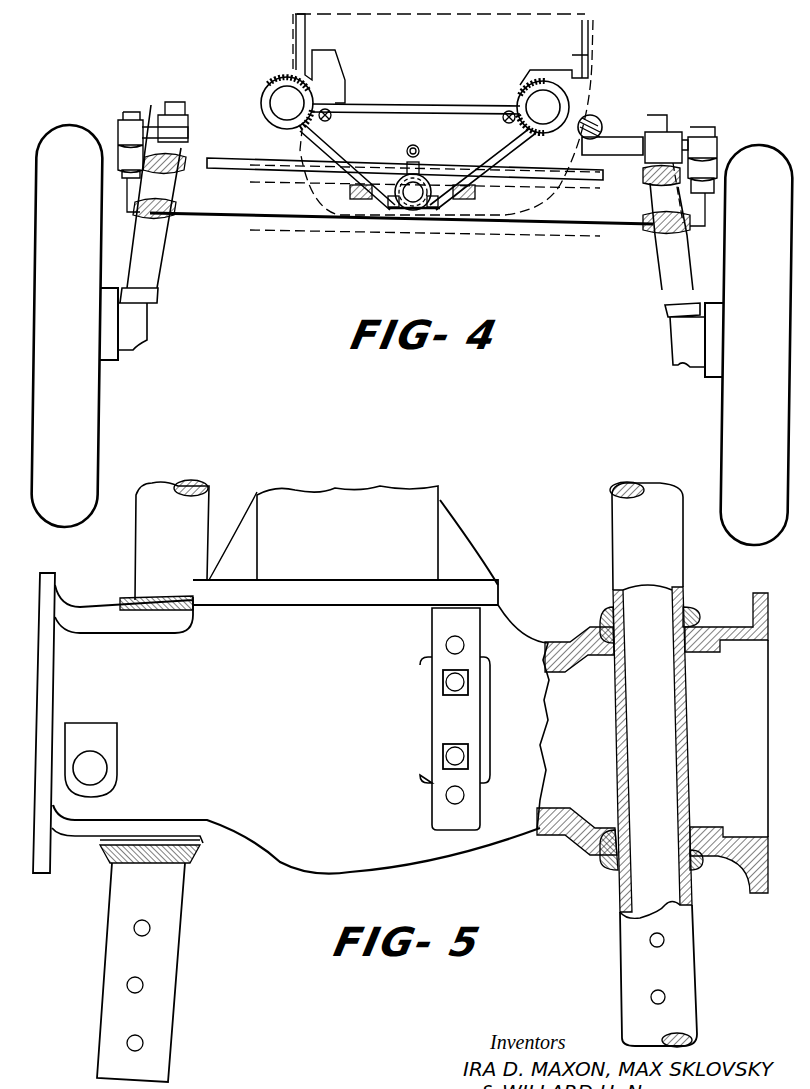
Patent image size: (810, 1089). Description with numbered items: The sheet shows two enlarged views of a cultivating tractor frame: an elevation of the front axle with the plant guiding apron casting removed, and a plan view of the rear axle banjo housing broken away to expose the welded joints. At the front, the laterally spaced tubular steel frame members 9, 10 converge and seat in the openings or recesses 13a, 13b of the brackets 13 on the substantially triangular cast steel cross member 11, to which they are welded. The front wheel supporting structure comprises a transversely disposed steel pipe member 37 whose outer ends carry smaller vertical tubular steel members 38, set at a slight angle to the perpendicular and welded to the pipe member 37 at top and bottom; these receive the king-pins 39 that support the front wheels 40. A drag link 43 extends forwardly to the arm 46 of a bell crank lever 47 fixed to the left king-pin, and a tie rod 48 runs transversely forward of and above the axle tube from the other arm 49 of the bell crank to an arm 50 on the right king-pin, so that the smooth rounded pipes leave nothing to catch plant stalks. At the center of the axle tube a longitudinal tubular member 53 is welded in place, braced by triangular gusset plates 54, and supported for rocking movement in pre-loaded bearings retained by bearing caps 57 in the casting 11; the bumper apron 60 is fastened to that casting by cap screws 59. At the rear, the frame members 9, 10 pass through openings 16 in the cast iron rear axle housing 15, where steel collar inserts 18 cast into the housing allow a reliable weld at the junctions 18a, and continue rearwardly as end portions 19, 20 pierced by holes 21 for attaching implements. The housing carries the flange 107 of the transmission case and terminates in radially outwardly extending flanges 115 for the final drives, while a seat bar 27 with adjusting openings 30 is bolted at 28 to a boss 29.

In FIG. 4, the tubular frame member 9 is at (566, 106).
In FIG. 5, the tubular frame member 9 is at (190, 508).
In FIG. 4, the tubular frame member 10 is at (268, 103).
In FIG. 5, the tubular frame member 10 is at (633, 517).
In FIG. 4, the cast steel cross member 11 is at (413, 120).
In FIG. 4, the bracket 13 is at (305, 90).
In FIG. 4, the opening or recess 13a is at (548, 95).
In FIG. 4, the opening or recess 13b is at (283, 86).
In FIG. 5, the rear axle housing 15 is at (305, 848).
In FIG. 5, the opening 16 is at (628, 665).
In FIG. 5, the steel collar insert 18 is at (122, 608).
In FIG. 5, the weld bead 18a is at (695, 635).
In FIG. 5, the rear end portion 19 is at (155, 900).
In FIG. 5, the rear end portion 20 is at (650, 965).
In FIG. 5, the hole 21 is at (145, 935).
In FIG. 5, the seat bar 27 is at (455, 808).
In FIG. 5, the bolt 28 is at (458, 683).
In FIG. 5, the boss 29 is at (432, 722).
In FIG. 5, the opening 30 is at (446, 645).
In FIG. 4, the transverse steel pipe member 37 is at (255, 192).
In FIG. 4, the vertical tubular steel member 38 is at (152, 243).
In FIG. 4, the king-pin 39 is at (135, 320).
In FIG. 4, the front wheel 40 is at (73, 372).
In FIG. 4, the drag link 43 is at (578, 128).
In FIG. 4, the arm 46 is at (620, 148).
In FIG. 4, the bell crank lever 47 is at (676, 110).
In FIG. 4, the tie rod 48 is at (302, 167).
In FIG. 4, the arm 49 is at (672, 142).
In FIG. 4, the arm 50 is at (152, 128).
In FIG. 4, the longitudinal tubular member 53 is at (420, 212).
In FIG. 4, the triangular gusset plate 54 is at (360, 198).
In FIG. 4, the bearing cap 57 is at (405, 212).
In FIG. 4, the cap screw 59 is at (331, 120).
In FIG. 4, the bumper apron 60 is at (545, 200).
In FIG. 5, the flange 107 is at (322, 588).
In FIG. 5, the radially outwardly extending flange 115 is at (47, 658).